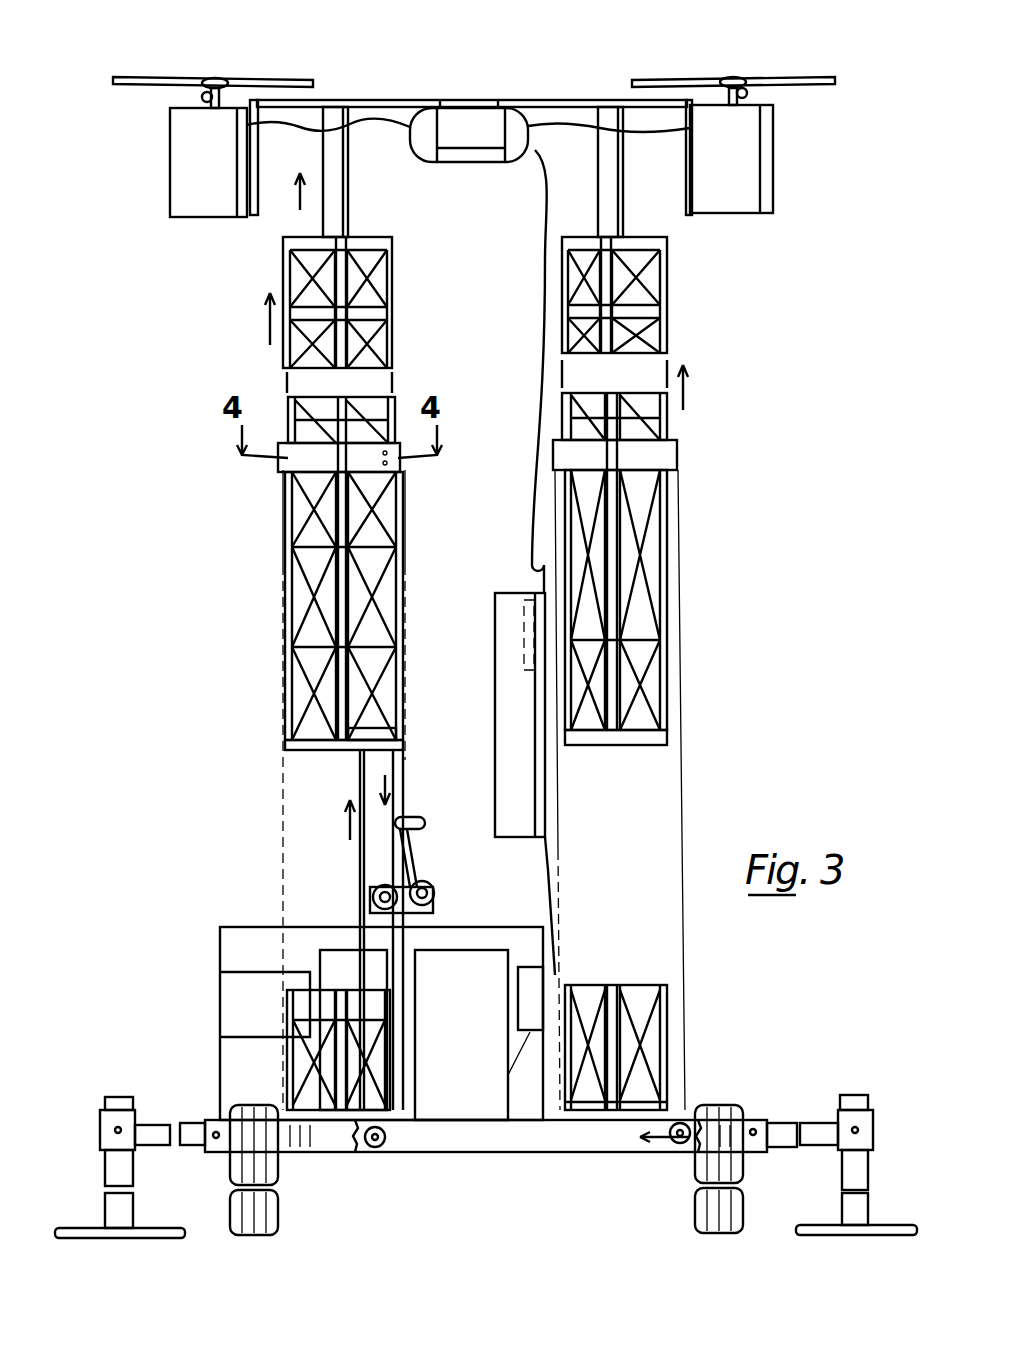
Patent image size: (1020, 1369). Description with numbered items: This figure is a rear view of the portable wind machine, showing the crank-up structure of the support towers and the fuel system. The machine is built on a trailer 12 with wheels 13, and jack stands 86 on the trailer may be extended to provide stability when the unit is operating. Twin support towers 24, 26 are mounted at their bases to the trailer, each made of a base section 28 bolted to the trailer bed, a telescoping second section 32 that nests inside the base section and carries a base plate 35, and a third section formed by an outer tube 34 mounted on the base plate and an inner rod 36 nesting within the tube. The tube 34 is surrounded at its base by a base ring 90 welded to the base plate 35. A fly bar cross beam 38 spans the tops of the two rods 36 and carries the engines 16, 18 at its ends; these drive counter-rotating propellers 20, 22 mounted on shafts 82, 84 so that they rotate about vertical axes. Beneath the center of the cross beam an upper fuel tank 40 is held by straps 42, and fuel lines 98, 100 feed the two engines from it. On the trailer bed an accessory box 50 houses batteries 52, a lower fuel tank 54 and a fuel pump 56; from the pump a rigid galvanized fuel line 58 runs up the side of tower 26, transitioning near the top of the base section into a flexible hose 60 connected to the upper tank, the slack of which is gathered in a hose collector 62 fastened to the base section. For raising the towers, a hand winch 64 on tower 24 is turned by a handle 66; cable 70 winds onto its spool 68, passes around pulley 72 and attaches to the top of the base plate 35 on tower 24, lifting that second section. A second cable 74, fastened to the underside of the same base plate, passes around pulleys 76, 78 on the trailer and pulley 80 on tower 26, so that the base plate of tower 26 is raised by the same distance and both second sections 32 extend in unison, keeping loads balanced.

The trailer 12 is at (750, 1120).
The wheels 13 is at (228, 1205).
The engine 16 is at (170, 208).
The engine 18 is at (773, 160).
The propeller 20 is at (165, 80).
The propeller 22 is at (808, 80).
The support tower 24 is at (265, 652).
The support tower 26 is at (699, 642).
The base section 28 is at (287, 1065).
The telescoping second section 32 is at (514, 302).
The first or outer tube 34 is at (385, 284).
The base plate 35 is at (292, 748).
The second or inner member or rod 36 is at (348, 192).
The fly bar cross beam 38 is at (562, 100).
The upper fuel tank 40 is at (478, 162).
The straps 42 is at (500, 100).
The accessory box 50 is at (220, 975).
The batteries 52 is at (258, 970).
The lower fuel tank 54 is at (470, 955).
The fuel pump 56 is at (543, 980).
The rigid galvanized fuel line 58 is at (548, 895).
The flexible hose 60 is at (532, 497).
The hose collector 62 is at (495, 690).
The hand winch 64 is at (438, 857).
The handle 66 is at (420, 818).
The spool 68 is at (434, 890).
The cable 70 is at (403, 762).
The pulley 72 is at (388, 458).
The cable 74 is at (370, 880).
The pulley 76 is at (385, 1147).
The pulley 78 is at (670, 1140).
The pulley 80 is at (677, 457).
The shaft 82 is at (202, 98).
The shaft 84 is at (747, 93).
The jack stands 86 is at (105, 1172).
The base ring 90 is at (390, 736).
The fuel line 98 is at (302, 128).
The fuel line 100 is at (655, 130).